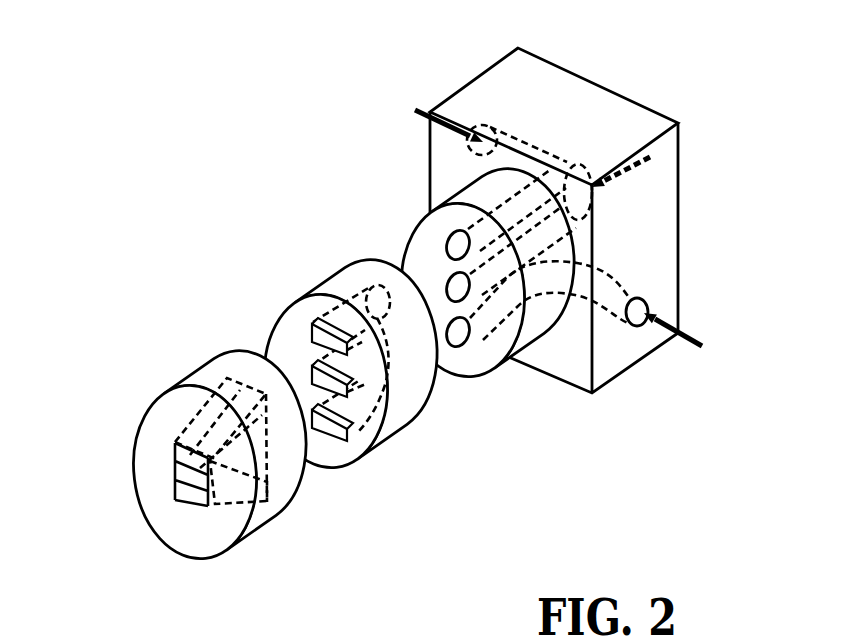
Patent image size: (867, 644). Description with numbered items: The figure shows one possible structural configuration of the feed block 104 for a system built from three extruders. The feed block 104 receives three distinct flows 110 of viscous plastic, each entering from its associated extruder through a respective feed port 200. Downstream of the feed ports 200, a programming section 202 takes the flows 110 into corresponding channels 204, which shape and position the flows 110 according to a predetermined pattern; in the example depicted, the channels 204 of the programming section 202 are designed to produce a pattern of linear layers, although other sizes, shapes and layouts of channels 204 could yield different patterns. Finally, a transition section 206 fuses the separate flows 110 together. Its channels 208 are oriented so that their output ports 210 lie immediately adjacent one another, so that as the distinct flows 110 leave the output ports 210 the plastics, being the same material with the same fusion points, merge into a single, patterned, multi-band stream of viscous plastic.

The feed block 104 is at (230, 132).
The flows of viscous plastic 110 is at (430, 108).
The feed port 200 is at (483, 153).
The programming section 202 is at (352, 467).
The channels 204 is at (340, 320).
The transition section 206 is at (203, 560).
The channels 208 is at (198, 422).
The output ports 210 is at (190, 492).